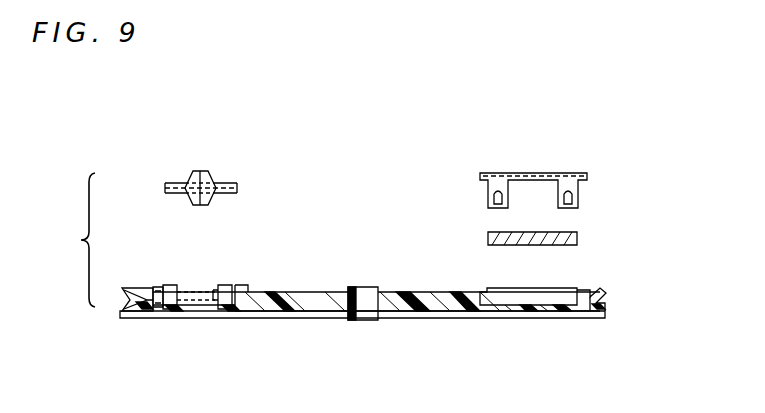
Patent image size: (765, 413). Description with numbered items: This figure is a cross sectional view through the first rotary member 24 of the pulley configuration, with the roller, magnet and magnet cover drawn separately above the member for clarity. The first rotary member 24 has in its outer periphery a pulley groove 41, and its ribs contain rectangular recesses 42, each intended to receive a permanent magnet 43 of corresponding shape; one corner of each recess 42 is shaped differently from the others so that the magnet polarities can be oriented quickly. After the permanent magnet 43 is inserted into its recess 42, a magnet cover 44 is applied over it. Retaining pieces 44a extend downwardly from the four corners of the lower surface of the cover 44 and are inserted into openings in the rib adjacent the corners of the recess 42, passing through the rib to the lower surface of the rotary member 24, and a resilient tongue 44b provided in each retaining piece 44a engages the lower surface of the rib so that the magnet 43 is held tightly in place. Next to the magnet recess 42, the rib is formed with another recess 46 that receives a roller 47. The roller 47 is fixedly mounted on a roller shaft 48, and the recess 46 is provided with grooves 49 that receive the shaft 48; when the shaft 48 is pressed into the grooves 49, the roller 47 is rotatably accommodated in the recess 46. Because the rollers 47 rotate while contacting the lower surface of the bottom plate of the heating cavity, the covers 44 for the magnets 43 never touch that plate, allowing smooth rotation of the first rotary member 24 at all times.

The first rotary member 24 is at (408, 291).
The pulley groove 41 is at (603, 313).
The rectangular recess 42 is at (550, 290).
The permanent magnet 43 is at (575, 240).
The magnet cover 44 is at (529, 153).
The retaining piece 44a is at (492, 187).
The resilient tongue 44b is at (509, 187).
The recess 46 is at (180, 313).
The roller 47 is at (213, 172).
The roller shaft 48 is at (240, 186).
The groove 49 is at (170, 289).